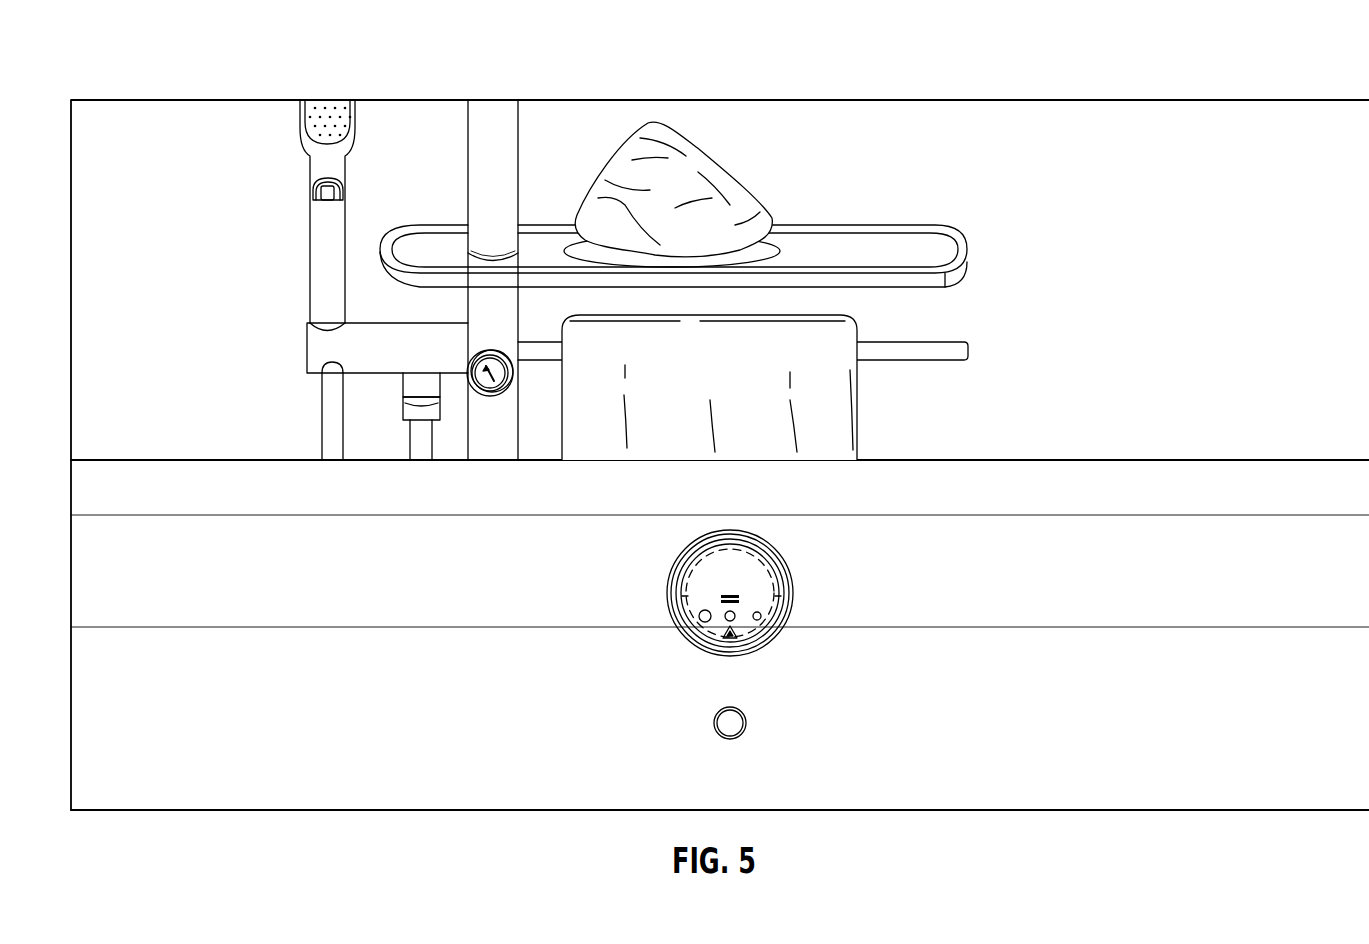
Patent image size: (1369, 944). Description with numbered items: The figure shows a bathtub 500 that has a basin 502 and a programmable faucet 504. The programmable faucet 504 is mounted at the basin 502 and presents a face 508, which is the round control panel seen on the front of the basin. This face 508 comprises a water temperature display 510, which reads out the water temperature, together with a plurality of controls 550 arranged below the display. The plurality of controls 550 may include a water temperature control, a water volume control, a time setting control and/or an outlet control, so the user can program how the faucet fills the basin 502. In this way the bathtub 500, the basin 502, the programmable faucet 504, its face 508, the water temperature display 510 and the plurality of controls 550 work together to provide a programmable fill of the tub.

The bathtub 500 is at (100, 59).
The basin 502 is at (319, 537).
The programmable faucet 504 is at (752, 510).
The face 508 is at (797, 552).
The water temperature display 510 is at (709, 573).
The plurality of controls 550 is at (712, 628).